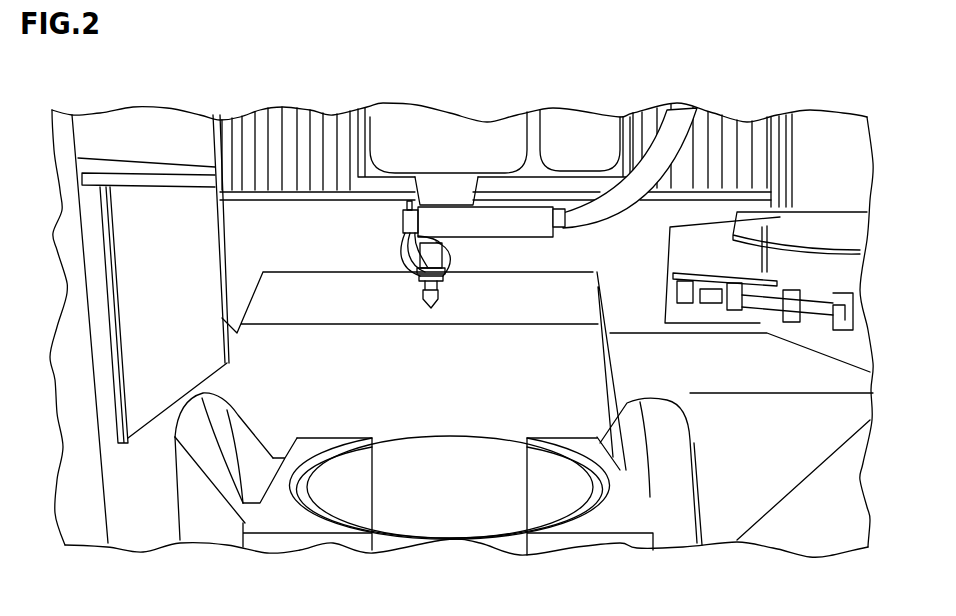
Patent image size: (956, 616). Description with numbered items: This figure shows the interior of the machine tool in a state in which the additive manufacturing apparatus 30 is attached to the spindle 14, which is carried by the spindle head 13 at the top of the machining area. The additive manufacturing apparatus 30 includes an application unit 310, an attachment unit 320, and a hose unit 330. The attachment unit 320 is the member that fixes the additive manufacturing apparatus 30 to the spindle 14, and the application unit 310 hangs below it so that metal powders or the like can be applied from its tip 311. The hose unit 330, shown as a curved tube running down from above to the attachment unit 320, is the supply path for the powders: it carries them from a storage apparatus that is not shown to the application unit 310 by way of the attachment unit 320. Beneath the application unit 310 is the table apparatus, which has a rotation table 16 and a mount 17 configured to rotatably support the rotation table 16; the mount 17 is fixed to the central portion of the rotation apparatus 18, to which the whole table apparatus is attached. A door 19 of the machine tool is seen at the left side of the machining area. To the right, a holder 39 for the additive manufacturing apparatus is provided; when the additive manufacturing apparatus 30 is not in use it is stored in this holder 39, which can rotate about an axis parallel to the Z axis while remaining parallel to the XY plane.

The spindle head 13 is at (453, 138).
The spindle 14 is at (532, 215).
The rotation table 16 is at (433, 512).
The mount 17 is at (287, 520).
The rotation apparatus 18 is at (208, 512).
The door 19 is at (165, 222).
The additive manufacturing apparatus 30 is at (383, 220).
The application unit 310 is at (405, 270).
The tip 311 is at (420, 302).
The attachment unit 320 is at (468, 187).
The hose unit 330 is at (663, 143).
The holder 39 is at (825, 343).